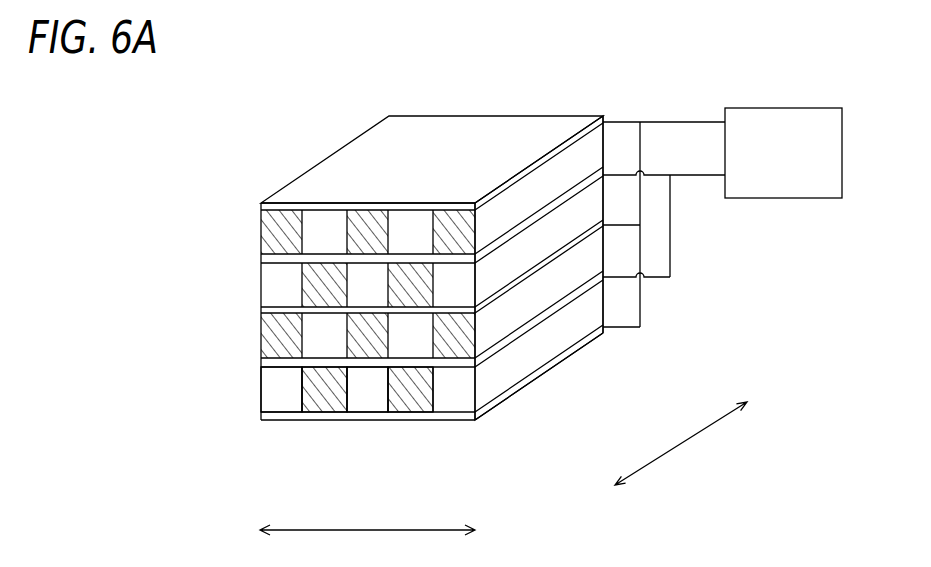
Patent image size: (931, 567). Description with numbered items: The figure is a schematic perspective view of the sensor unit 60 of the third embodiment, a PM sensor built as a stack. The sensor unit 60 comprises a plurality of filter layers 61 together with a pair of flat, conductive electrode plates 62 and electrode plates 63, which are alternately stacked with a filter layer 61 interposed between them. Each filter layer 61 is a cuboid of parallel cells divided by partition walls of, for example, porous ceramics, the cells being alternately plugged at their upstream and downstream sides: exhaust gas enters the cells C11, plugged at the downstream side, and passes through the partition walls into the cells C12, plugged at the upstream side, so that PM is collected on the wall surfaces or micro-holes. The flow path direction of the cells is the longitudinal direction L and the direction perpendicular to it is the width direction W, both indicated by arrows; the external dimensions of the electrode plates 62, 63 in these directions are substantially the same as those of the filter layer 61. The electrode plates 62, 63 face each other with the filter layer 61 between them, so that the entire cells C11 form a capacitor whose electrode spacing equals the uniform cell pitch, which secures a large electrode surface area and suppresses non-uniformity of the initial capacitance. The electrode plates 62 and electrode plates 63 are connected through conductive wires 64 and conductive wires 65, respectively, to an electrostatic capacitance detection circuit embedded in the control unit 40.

The sensor unit 60 is at (455, 103).
The filter layer 61 is at (503, 222).
The electrode plate 62 is at (207, 442).
The electrode plate 63 is at (262, 363).
The conductive wire 64 is at (683, 121).
The conductive wire 65 is at (702, 180).
The control unit 40 is at (765, 167).
The cell C11 is at (355, 403).
The cell C12 is at (415, 408).
The width direction W is at (367, 543).
The longitudinal direction L is at (681, 443).